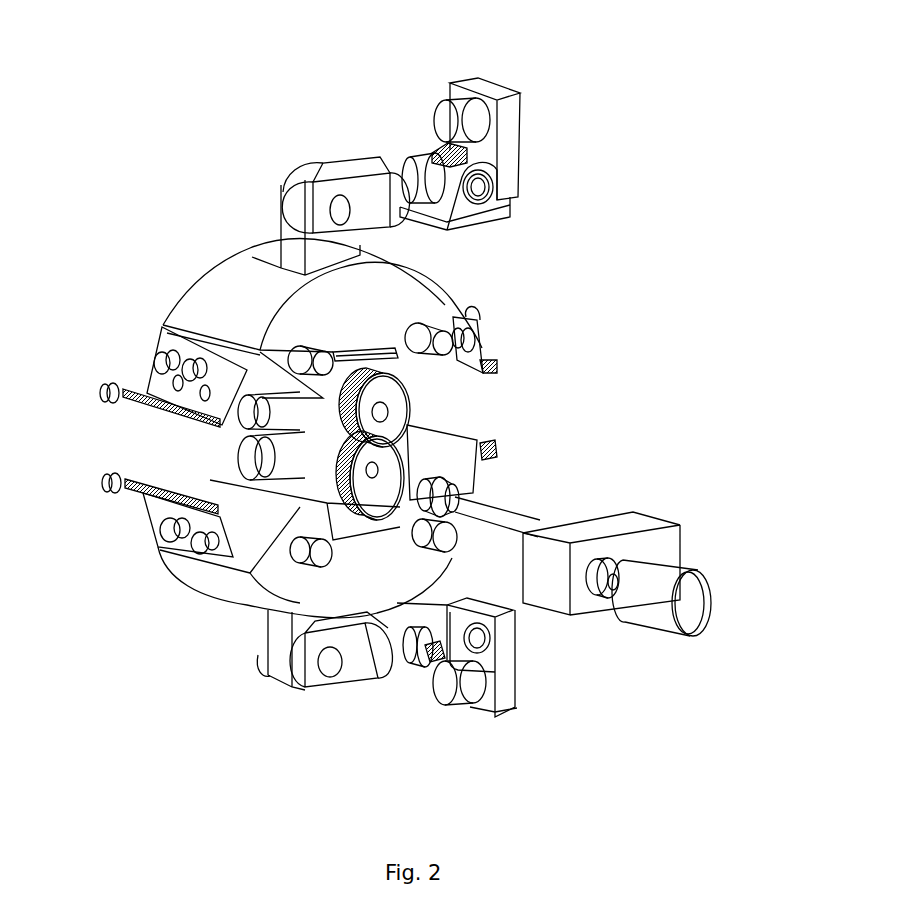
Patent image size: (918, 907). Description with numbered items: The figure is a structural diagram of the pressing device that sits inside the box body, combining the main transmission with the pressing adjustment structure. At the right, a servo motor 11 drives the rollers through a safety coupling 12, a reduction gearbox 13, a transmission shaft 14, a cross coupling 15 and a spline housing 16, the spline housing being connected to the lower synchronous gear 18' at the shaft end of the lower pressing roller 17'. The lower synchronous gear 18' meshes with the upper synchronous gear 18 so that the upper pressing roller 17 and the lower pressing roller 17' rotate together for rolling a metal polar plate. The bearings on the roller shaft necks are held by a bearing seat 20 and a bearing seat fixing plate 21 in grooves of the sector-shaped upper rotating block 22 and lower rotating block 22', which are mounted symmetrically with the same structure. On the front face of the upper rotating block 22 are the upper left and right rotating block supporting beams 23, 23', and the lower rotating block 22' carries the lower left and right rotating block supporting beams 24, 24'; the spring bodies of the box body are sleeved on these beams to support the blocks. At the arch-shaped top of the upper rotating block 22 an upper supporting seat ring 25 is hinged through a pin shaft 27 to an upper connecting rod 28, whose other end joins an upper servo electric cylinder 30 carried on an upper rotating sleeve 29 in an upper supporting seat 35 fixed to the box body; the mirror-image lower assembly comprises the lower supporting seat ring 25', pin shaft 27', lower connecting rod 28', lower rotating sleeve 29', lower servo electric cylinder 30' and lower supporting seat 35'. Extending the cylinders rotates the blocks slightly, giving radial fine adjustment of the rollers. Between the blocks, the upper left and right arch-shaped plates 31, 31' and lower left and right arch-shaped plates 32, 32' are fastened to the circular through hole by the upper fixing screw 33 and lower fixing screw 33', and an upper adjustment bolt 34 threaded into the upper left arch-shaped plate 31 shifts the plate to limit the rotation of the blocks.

The servo motor 11 is at (653, 593).
The safety coupling 12 is at (600, 573).
The reduction gearbox 13 is at (608, 528).
The transmission shaft 14 is at (507, 518).
The cross coupling 15 is at (432, 498).
The spline housing 16 is at (390, 485).
The upper pressing roller 17 is at (173, 285).
The lower pressing roller 17' is at (171, 434).
The upper synchronous gear 18 is at (460, 368).
The lower synchronous gear 18' is at (463, 420).
The left bearing seat 20 is at (425, 345).
The left bearing seat fixing plate 21 is at (366, 361).
The upper rotating block 22 is at (322, 214).
The lower rotating block 22' is at (244, 598).
The upper left rotating block supporting beam 23 is at (190, 235).
The upper right rotating block supporting beam 23' is at (516, 288).
The lower left rotating block supporting beam 24 is at (187, 591).
The lower right rotating block supporting beam 24' is at (533, 654).
The upper supporting seat ring 25 is at (245, 152).
The lower supporting seat ring 25' is at (199, 702).
The pin shaft 27 is at (292, 131).
The pin shaft 27' is at (290, 703).
The upper connecting rod 28 is at (355, 128).
The lower connecting rod 28' is at (357, 708).
The upper rotating sleeve 29 is at (478, 98).
The lower rotating sleeve 29' is at (400, 717).
The upper servo electric cylinder 30 is at (507, 115).
The lower servo electric cylinder 30' is at (493, 696).
The upper left arch-shaped plate 31 is at (127, 320).
The upper right arch-shaped plate 31' is at (521, 308).
The lower left arch-shaped plate 32 is at (131, 495).
The lower right arch-shaped plate 32' is at (516, 405).
The upper fixing screw 33 is at (147, 310).
The lower fixing screw 33' is at (135, 527).
The upper adjustment bolt 34 is at (127, 393).
The upper supporting seat 35 is at (490, 167).
The lower supporting seat 35' is at (478, 703).